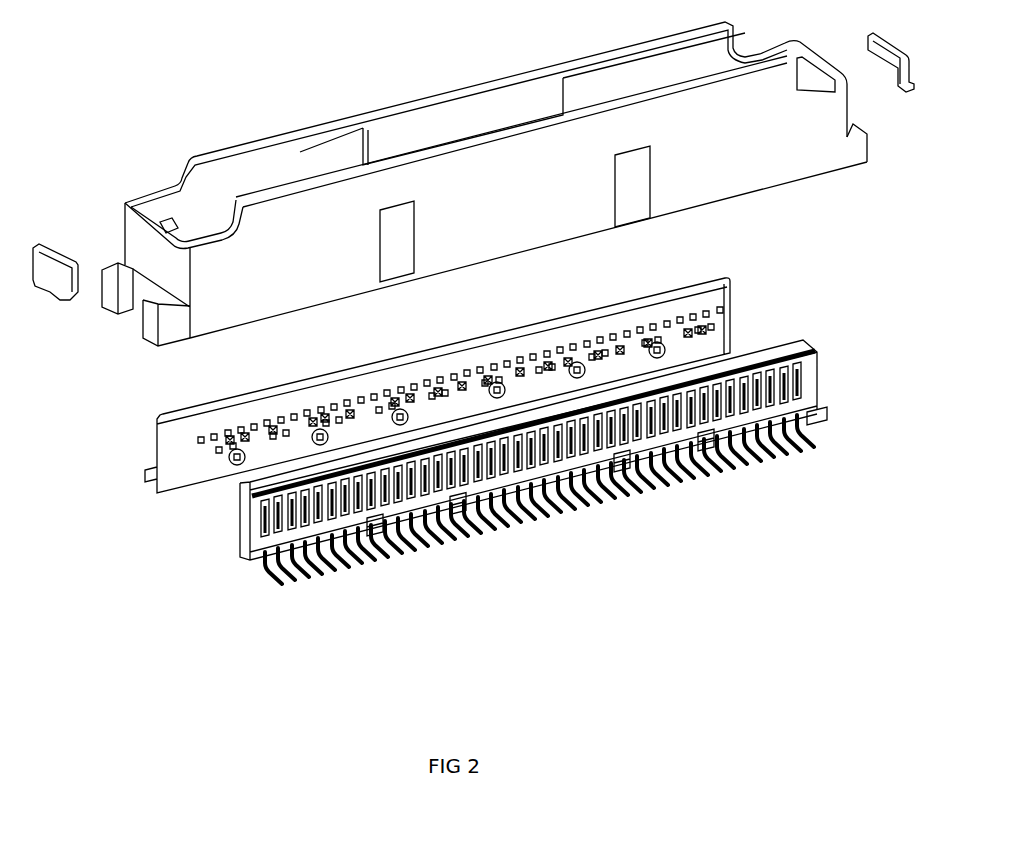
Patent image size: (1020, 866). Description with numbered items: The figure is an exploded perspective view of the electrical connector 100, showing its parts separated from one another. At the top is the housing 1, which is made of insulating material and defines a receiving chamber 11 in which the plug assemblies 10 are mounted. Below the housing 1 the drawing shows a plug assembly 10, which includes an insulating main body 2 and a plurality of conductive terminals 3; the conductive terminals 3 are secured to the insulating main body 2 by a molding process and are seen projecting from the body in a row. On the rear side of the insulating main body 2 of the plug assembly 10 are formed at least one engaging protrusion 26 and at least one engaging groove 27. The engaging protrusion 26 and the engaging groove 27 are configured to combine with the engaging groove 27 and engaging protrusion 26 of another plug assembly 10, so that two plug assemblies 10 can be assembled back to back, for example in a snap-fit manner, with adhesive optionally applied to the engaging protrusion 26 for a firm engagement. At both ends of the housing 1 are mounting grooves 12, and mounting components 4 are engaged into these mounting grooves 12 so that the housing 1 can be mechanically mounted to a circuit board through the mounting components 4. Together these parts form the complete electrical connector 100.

The electrical connector 100 is at (336, 34).
The housing 1 is at (466, 184).
The receiving chamber 11 is at (292, 173).
The mounting groove 12 is at (131, 305).
The mounting component 4 is at (887, 67).
The plug assembly 10 is at (494, 452).
The insulating main body 2 is at (489, 474).
The conductive terminal 3 is at (668, 492).
The engaging protrusion 26 is at (325, 447).
The engaging groove 27 is at (500, 402).